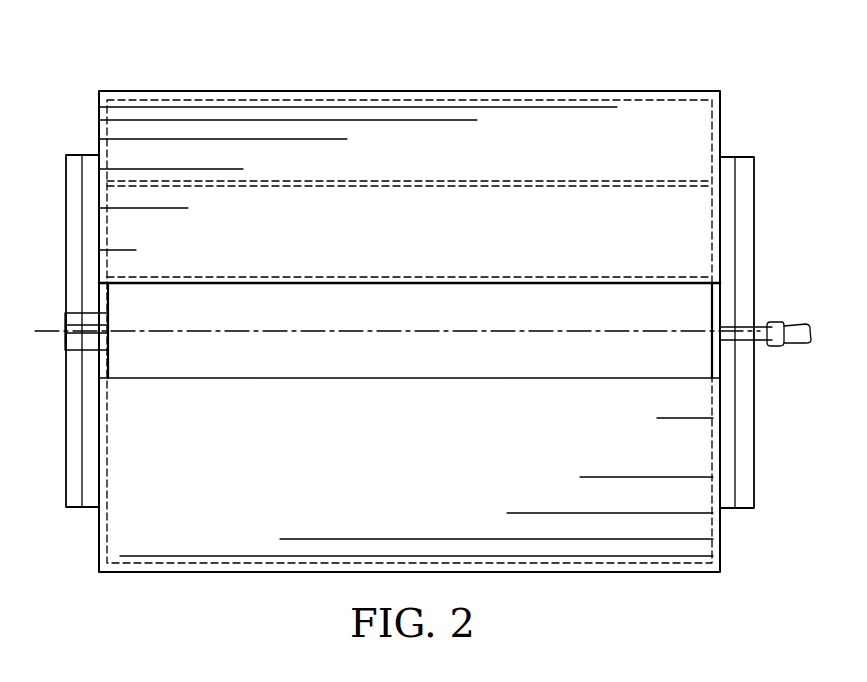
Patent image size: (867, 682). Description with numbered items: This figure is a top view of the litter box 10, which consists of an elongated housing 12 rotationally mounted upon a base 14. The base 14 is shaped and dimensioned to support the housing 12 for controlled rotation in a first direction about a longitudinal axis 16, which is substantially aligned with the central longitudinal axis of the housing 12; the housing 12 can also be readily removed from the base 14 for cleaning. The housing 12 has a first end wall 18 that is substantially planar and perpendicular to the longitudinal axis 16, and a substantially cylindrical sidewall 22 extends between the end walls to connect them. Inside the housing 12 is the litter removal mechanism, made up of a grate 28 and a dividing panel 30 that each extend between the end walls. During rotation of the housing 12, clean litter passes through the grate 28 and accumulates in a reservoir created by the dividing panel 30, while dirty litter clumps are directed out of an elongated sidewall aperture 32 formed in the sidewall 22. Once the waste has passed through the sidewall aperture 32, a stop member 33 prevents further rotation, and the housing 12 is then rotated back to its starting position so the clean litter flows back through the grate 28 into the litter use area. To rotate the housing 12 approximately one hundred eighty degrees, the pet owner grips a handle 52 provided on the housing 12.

The litter box 10 is at (370, 297).
The housing 12 is at (221, 90).
The base 14 is at (744, 483).
The longitudinal axis 16 is at (335, 331).
The first end wall 18 is at (100, 430).
The sidewall 22 is at (470, 92).
The grate 28 is at (567, 183).
The dividing panel 30 is at (545, 283).
The sidewall aperture 32 is at (152, 287).
The stop member 33 is at (64, 348).
The handle 52 is at (790, 325).